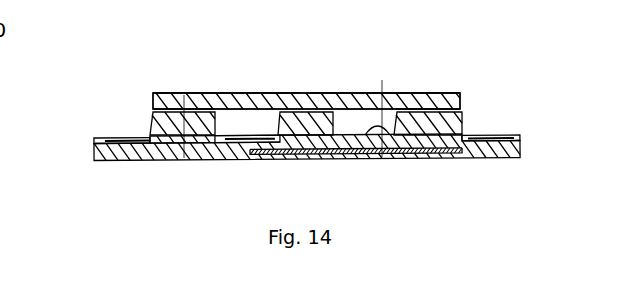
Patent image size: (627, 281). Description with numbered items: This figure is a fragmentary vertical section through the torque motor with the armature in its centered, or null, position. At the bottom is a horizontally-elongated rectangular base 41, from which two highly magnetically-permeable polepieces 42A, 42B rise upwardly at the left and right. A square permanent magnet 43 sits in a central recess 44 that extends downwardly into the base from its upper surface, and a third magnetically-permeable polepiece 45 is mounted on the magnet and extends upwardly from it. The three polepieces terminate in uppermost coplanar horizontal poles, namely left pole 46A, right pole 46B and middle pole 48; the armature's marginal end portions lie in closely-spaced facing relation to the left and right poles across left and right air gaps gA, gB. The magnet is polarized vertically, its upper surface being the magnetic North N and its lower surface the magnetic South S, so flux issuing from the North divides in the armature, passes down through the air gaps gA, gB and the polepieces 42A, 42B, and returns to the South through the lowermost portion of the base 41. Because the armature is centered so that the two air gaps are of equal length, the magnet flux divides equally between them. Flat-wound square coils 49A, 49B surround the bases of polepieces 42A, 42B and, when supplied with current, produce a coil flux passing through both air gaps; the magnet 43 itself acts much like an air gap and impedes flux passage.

The base 41 is at (528, 156).
The left polepiece 42A is at (146, 124).
The right polepiece 42B is at (468, 120).
The permanent magnet 43 is at (315, 150).
The central recess 44 is at (383, 149).
The middle polepiece 45 is at (270, 122).
The left pole 46A is at (173, 105).
The right pole 46B is at (436, 105).
The middle pole 48 is at (304, 93).
The left coil 49A is at (86, 139).
The right coil 49B is at (528, 135).
The magnetic North pole N is at (331, 128).
The magnetic South pole S is at (293, 154).
The left air gap gA is at (148, 108).
The right air gap gB is at (468, 107).